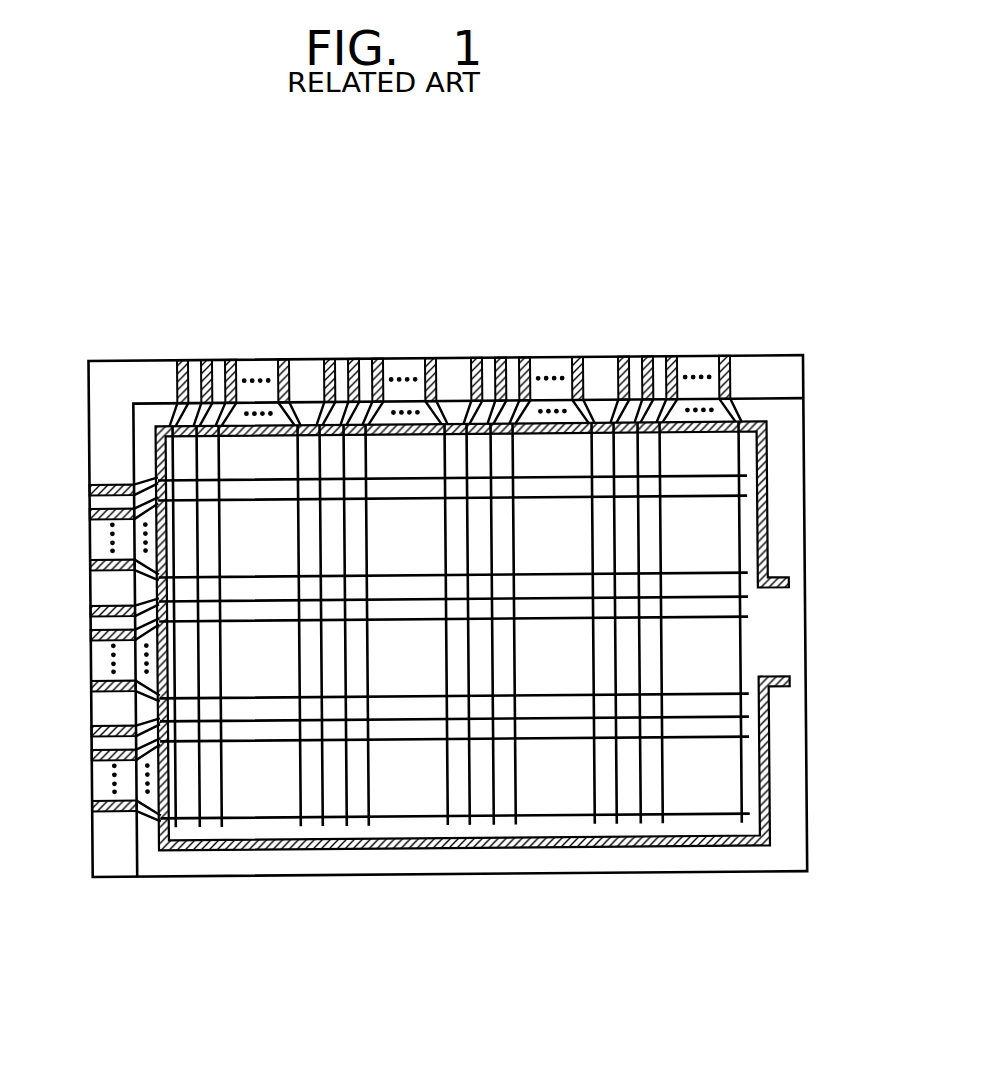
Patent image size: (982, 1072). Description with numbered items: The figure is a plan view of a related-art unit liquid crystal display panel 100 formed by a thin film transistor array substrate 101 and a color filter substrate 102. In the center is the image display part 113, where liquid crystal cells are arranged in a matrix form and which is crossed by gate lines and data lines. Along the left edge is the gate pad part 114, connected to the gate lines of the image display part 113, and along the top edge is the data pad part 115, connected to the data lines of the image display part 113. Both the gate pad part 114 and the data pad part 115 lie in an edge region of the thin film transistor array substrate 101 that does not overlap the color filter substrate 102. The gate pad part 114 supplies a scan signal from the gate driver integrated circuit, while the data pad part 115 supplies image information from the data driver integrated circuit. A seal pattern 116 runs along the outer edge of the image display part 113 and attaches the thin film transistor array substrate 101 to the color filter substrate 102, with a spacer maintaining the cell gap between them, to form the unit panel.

The liquid crystal display panel 100 is at (117, 347).
The thin film transistor array substrate 101 is at (792, 385).
The color filter substrate 102 is at (792, 447).
The image display part 113 is at (425, 549).
The gate pad part 114 is at (78, 818).
The data pad part 115 is at (737, 345).
The seal pattern 116 is at (766, 513).